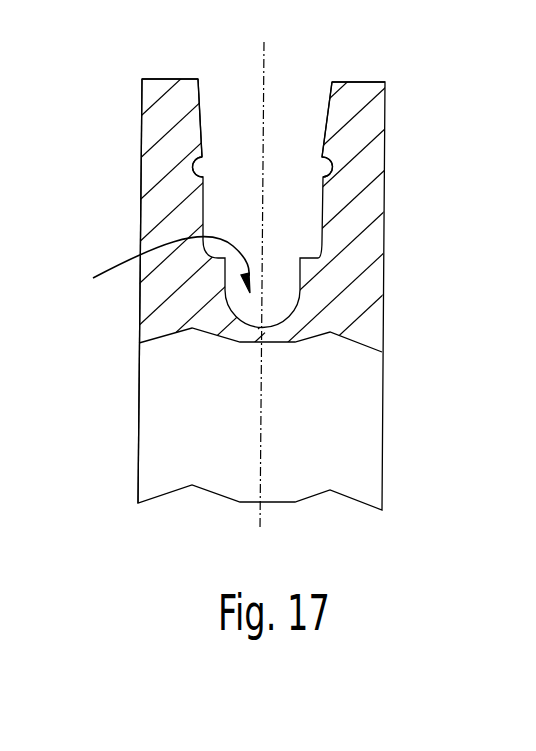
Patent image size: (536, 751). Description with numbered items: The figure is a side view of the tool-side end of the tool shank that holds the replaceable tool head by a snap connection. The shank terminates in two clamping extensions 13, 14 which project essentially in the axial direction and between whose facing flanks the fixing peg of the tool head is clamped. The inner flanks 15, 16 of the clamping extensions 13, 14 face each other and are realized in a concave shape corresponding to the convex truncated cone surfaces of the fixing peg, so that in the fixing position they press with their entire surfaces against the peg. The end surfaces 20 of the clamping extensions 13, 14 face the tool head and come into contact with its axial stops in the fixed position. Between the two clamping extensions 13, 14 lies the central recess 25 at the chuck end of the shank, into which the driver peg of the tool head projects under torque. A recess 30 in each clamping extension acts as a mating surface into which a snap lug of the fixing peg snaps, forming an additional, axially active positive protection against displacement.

The clamping extension 13 is at (370, 192).
The clamping extension 14 is at (153, 213).
The inner flank 15 is at (328, 117).
The inner flank 16 is at (202, 112).
The end surface 20 is at (161, 77).
The central recess 25 is at (157, 266).
The recess 30 is at (202, 163).